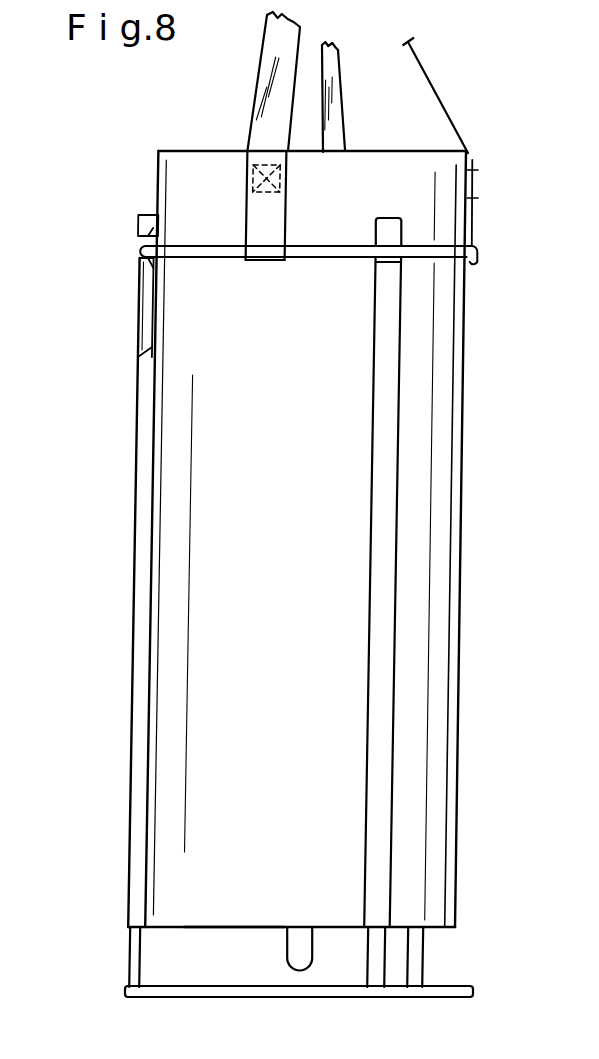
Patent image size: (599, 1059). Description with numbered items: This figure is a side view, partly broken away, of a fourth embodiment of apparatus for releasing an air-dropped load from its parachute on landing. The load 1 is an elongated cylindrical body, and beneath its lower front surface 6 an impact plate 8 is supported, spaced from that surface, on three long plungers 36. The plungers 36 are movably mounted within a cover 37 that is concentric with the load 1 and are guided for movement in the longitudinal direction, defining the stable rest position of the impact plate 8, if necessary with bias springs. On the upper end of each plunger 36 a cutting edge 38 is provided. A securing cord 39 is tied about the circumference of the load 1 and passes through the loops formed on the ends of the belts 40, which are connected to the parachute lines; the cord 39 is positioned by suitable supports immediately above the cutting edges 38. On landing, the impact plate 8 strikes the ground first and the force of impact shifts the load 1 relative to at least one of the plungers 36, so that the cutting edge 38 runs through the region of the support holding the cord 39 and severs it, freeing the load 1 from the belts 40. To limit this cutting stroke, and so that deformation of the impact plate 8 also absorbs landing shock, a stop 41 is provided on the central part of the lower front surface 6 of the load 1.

The load 1 is at (173, 596).
The lower front surface 6 is at (182, 928).
The impact plate 8 is at (147, 987).
The plunger 36 is at (135, 948).
The cover 37 is at (137, 433).
The cutting edge 38 is at (147, 270).
The securing cord 39 is at (427, 255).
The belt 40 is at (333, 92).
The stop 41 is at (303, 947).